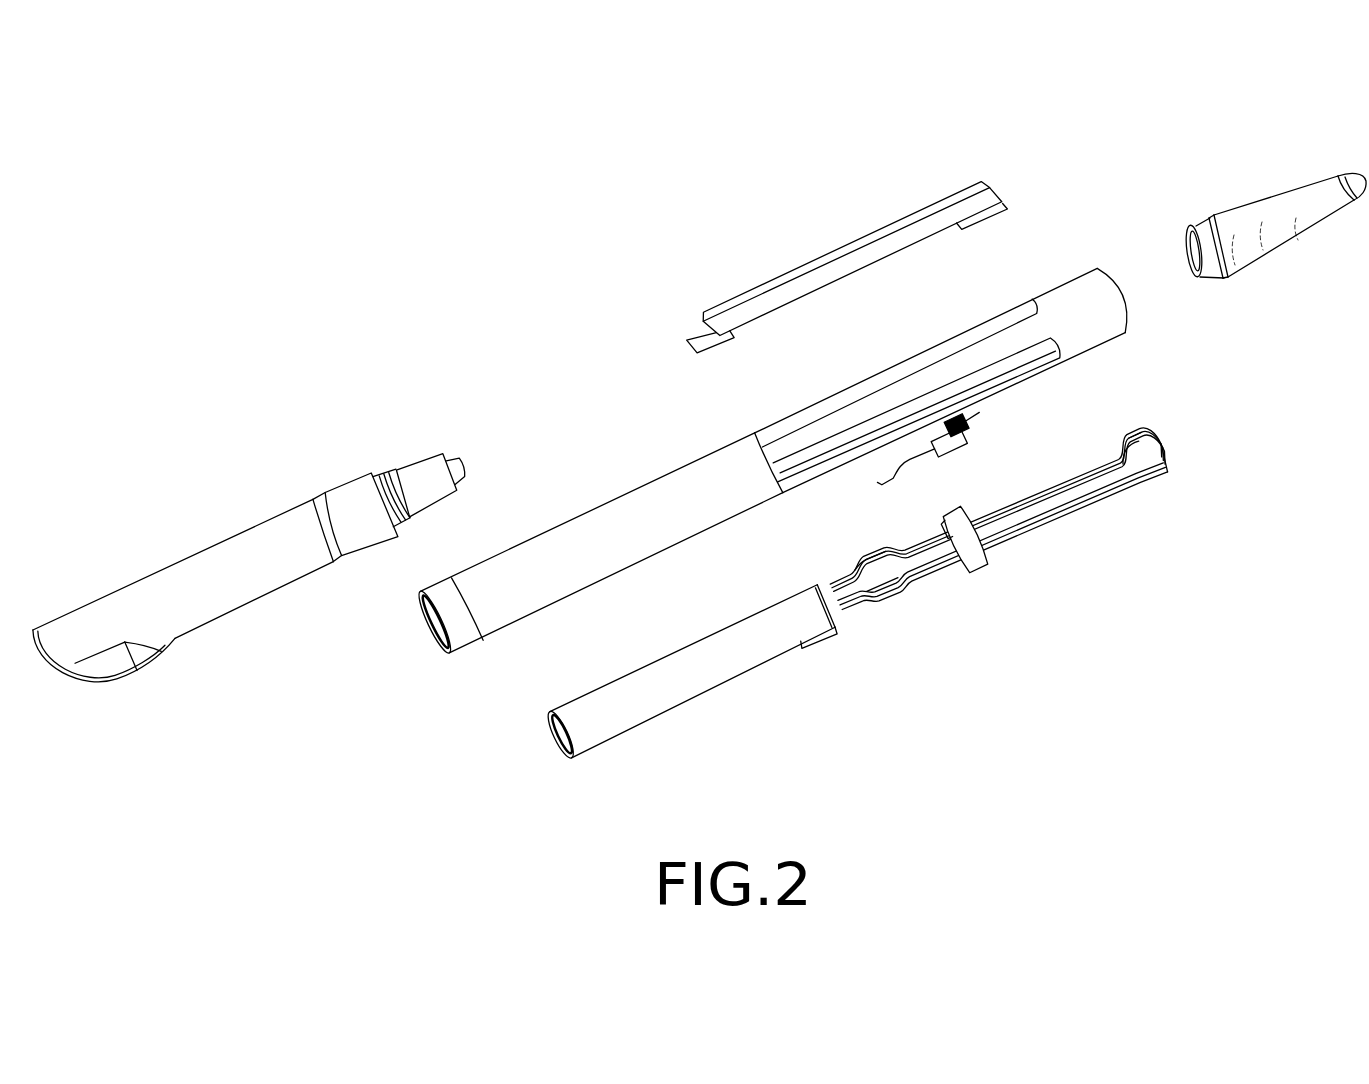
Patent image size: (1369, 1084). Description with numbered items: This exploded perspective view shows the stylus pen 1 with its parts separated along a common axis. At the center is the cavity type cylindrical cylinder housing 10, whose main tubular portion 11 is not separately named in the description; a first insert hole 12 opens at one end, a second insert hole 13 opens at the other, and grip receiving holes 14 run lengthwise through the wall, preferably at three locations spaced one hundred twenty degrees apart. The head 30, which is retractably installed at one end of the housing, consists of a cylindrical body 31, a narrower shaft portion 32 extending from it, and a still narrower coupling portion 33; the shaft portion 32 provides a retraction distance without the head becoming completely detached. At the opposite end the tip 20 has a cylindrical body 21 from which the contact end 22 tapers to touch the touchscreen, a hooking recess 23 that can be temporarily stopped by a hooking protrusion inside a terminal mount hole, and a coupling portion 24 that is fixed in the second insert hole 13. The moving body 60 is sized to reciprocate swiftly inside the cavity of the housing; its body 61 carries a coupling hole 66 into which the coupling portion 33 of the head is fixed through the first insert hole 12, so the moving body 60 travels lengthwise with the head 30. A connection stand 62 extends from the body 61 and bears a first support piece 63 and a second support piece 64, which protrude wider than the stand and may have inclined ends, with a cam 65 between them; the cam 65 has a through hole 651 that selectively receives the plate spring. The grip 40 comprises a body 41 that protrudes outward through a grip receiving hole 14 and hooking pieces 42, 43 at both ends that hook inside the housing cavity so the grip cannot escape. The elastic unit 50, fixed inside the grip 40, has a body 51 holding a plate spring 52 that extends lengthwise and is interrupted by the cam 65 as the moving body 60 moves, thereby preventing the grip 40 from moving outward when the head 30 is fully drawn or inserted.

The stylus pen 1 is at (380, 329).
The cylinder housing 10 is at (737, 426).
The barrel body 11 is at (597, 520).
The first insert hole 12 is at (421, 627).
The second insert hole 13 is at (1114, 293).
The grip receiving holes 14 is at (985, 328).
The tip 20 is at (1269, 223).
The tip cone 21 is at (1292, 191).
The contact end 22 is at (1350, 175).
The hooking recess 23 is at (1209, 222).
The coupling portion 24 is at (1214, 270).
The head 30 is at (262, 548).
The body 31 is at (234, 540).
The shaft portion 32 is at (343, 487).
The coupling portion 33 is at (461, 462).
The grip 40 is at (834, 264).
The body 41 is at (848, 240).
The hooking piece 42 is at (688, 349).
The hooking piece 43 is at (995, 198).
The elastic unit 50 is at (967, 460).
The body 51 is at (965, 440).
The plate spring 52 is at (900, 452).
The moving body 60 is at (825, 608).
The body 61 is at (638, 718).
The connection stand 62 is at (1006, 537).
The first support piece 63 is at (877, 580).
The second support piece 64 is at (1125, 462).
The cam 65 is at (985, 540).
The through hole 651 is at (943, 529).
The coupling hole 66 is at (552, 740).